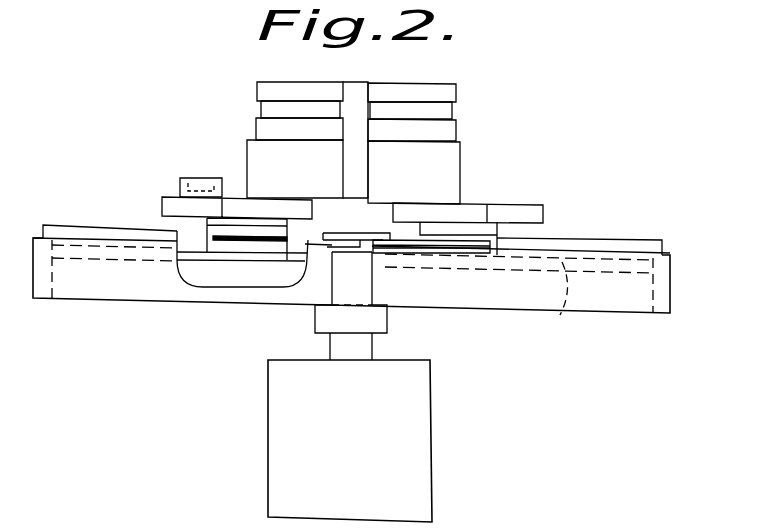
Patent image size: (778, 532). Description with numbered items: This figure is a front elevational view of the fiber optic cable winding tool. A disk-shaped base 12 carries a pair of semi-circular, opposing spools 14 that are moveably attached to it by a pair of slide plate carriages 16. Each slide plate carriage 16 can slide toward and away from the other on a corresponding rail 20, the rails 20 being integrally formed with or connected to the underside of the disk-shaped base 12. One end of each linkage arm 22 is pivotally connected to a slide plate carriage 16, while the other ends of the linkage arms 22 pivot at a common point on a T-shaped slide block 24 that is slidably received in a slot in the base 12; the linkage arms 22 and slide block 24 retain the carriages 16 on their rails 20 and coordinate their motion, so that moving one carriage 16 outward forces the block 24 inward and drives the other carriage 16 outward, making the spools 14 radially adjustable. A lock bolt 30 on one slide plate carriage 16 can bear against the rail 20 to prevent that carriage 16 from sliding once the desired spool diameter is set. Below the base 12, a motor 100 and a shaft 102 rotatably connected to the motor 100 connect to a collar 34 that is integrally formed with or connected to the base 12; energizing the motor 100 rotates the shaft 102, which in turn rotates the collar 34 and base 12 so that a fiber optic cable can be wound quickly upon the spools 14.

The disk-shaped base 12 is at (640, 247).
The spool 14 is at (333, 93).
The slide plate carriage 16 is at (174, 207).
The rail 20 is at (562, 314).
The linkage arm 22 is at (387, 240).
The T-shaped slide block 24 is at (362, 256).
The lock bolt 30 is at (214, 178).
The collar 34 is at (330, 322).
The motor 100 is at (403, 450).
The shaft 102 is at (375, 352).